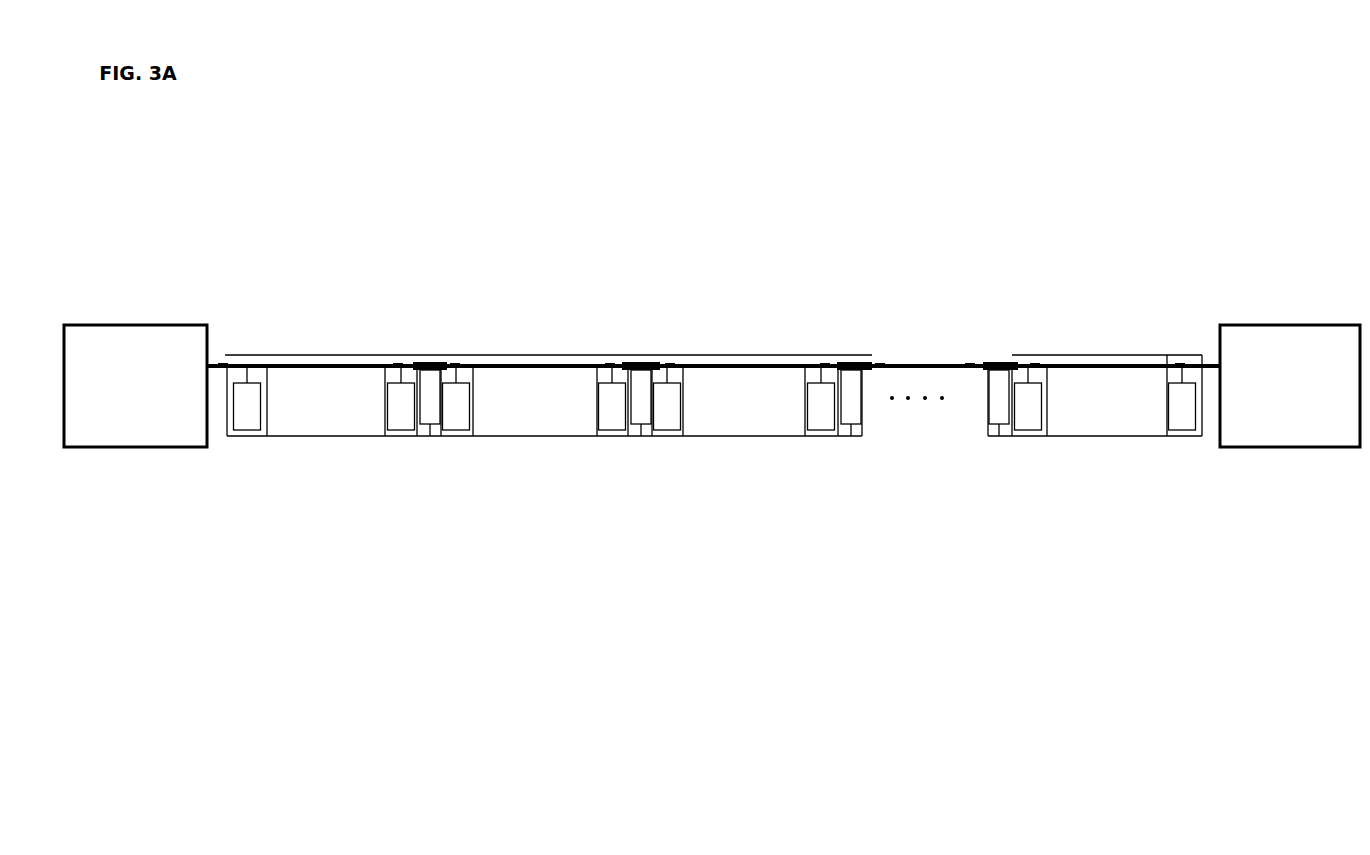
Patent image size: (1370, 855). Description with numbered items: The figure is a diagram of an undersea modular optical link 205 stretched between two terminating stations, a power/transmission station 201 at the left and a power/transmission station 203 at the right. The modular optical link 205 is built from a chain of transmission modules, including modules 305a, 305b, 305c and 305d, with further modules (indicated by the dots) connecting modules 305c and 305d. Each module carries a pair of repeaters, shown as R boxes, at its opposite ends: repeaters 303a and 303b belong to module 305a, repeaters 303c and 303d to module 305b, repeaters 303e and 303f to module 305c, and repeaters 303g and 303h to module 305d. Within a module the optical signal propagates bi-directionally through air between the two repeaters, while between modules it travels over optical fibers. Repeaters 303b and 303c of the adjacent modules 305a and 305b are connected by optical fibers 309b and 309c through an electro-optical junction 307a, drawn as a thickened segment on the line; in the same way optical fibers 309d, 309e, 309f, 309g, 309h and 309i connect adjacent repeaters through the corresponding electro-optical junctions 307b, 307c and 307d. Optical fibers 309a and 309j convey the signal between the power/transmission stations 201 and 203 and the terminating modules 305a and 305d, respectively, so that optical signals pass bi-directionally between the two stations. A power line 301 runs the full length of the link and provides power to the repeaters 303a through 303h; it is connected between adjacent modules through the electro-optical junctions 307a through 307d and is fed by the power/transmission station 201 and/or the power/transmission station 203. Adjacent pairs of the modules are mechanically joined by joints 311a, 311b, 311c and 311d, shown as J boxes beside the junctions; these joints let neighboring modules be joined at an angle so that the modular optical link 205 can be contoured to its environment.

The power/transmission station 201 is at (123, 425).
The power/transmission station 203 is at (1277, 425).
The modular optical link 205 is at (780, 198).
The power line 301 is at (277, 356).
The repeater 303a is at (245, 431).
The repeater 303b is at (400, 431).
The repeater 303c is at (455, 431).
The repeater 303d is at (611, 431).
The repeater 303e is at (666, 431).
The repeater 303f is at (820, 431).
The repeater 303g is at (1027, 431).
The repeater 303h is at (1181, 431).
The transmission module 305a is at (325, 437).
The transmission module 305b is at (538, 437).
The transmission module 305c is at (750, 437).
The transmission module 305d is at (1107, 437).
The electro-optical junction 307a is at (427, 362).
The electro-optical junction 307b is at (641, 362).
The electro-optical junction 307c is at (849, 362).
The electro-optical junction 307d is at (999, 362).
The optical fiber 309a is at (222, 363).
The optical fiber 309b is at (398, 363).
The optical fiber 309c is at (455, 363).
The optical fiber 309d is at (610, 363).
The optical fiber 309e is at (670, 363).
The optical fiber 309f is at (825, 363).
The optical fiber 309g is at (880, 363).
The optical fiber 309h is at (970, 363).
The optical fiber 309i is at (1035, 363).
The optical fiber 309j is at (1180, 363).
The joint 311a is at (430, 436).
The joint 311b is at (641, 436).
The joint 311c is at (851, 436).
The joint 311d is at (999, 436).